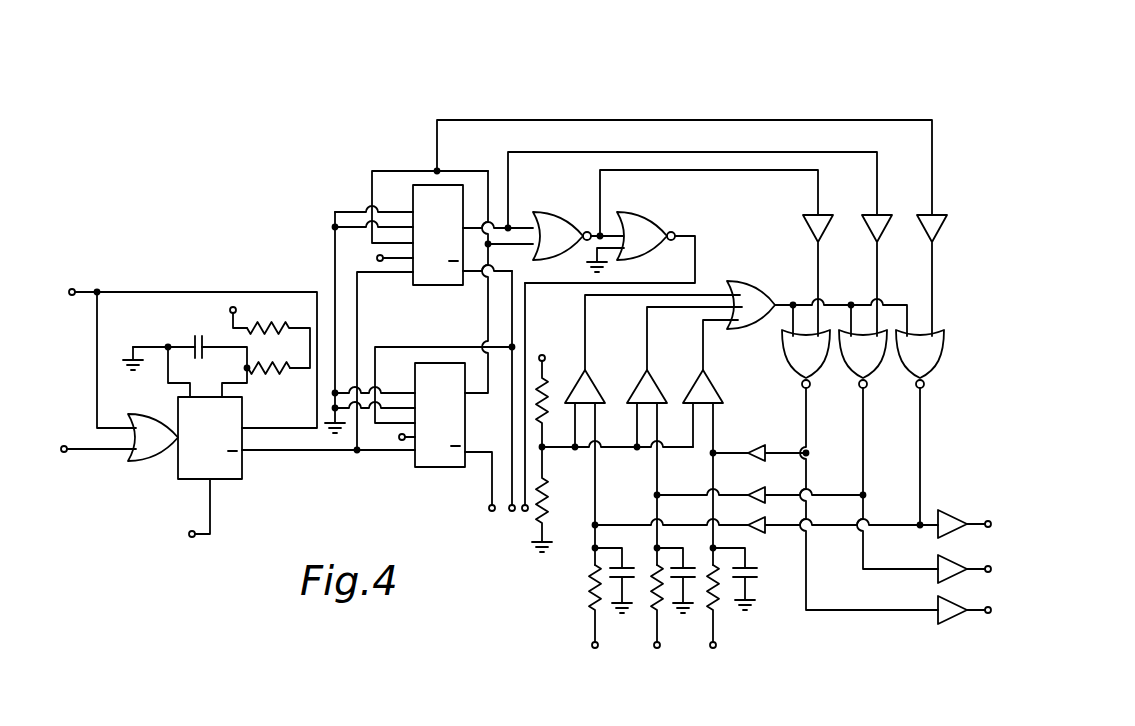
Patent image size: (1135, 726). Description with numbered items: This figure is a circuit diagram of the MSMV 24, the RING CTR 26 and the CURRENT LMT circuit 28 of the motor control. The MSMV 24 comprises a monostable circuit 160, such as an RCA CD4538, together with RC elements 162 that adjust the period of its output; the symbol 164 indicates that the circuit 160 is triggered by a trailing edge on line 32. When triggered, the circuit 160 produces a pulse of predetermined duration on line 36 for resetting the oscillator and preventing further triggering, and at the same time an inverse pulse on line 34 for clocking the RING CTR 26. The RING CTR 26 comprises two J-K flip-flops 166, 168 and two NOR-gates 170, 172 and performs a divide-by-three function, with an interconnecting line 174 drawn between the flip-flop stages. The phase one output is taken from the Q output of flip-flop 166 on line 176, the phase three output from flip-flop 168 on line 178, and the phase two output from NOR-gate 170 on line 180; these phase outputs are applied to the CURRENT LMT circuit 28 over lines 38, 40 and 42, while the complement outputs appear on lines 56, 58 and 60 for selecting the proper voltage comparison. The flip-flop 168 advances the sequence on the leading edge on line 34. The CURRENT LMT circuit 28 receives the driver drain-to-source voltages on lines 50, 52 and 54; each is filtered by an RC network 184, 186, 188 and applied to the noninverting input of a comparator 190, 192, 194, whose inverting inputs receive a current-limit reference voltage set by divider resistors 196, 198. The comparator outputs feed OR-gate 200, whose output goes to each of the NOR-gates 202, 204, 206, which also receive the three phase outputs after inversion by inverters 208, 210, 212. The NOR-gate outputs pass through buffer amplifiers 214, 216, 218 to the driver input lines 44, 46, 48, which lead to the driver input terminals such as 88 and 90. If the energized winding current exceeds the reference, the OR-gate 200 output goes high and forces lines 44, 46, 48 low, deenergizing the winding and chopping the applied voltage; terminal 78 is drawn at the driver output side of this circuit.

The MSMV 24 is at (206, 245).
The RING CTR 26 is at (530, 116).
The CURRENT LMT circuit 28 is at (776, 106).
The line 32 is at (80, 452).
The line 34 is at (290, 453).
The line 36 is at (80, 290).
The line 38 is at (681, 152).
The line 40 is at (748, 173).
The line 42 is at (641, 119).
The input line 44 is at (969, 575).
The input line 46 is at (967, 616).
The input line 48 is at (970, 519).
The line 50 is at (656, 628).
The line 52 is at (710, 628).
The line 54 is at (593, 618).
The line 56 is at (510, 514).
The line 58 is at (524, 440).
The line 60 is at (490, 470).
The output terminal 78 is at (990, 568).
The input terminal 88 is at (988, 614).
The input terminal 90 is at (988, 520).
The circuit 160 is at (242, 482).
The RC elements 162 is at (202, 310).
The symbol 164 is at (152, 465).
The J-K flip-flop 166 is at (420, 288).
The J-K flip-flop 168 is at (440, 362).
The NOR-gate 170 is at (577, 213).
The NOR-gate 172 is at (646, 257).
The line 174 is at (372, 170).
The line 176 is at (489, 216).
The line 178 is at (492, 315).
The line 180 is at (618, 228).
The RC network 184 is at (683, 642).
The RC network 186 is at (738, 625).
The RC network 188 is at (619, 632).
The comparator 190 is at (650, 378).
The comparator 192 is at (709, 385).
The comparator 194 is at (588, 378).
The divider resistor 196 is at (544, 380).
The divider resistor 198 is at (546, 506).
The OR-gate 200 is at (753, 291).
The NOR-gate 202 is at (873, 378).
The NOR-gate 204 is at (813, 378).
The NOR-gate 206 is at (931, 376).
The inverter 208 is at (879, 214).
The inverter 210 is at (810, 213).
The inverter 212 is at (937, 214).
The buffer amplifier 214 is at (940, 561).
The buffer amplifier 216 is at (940, 607).
The buffer amplifier 218 is at (950, 510).